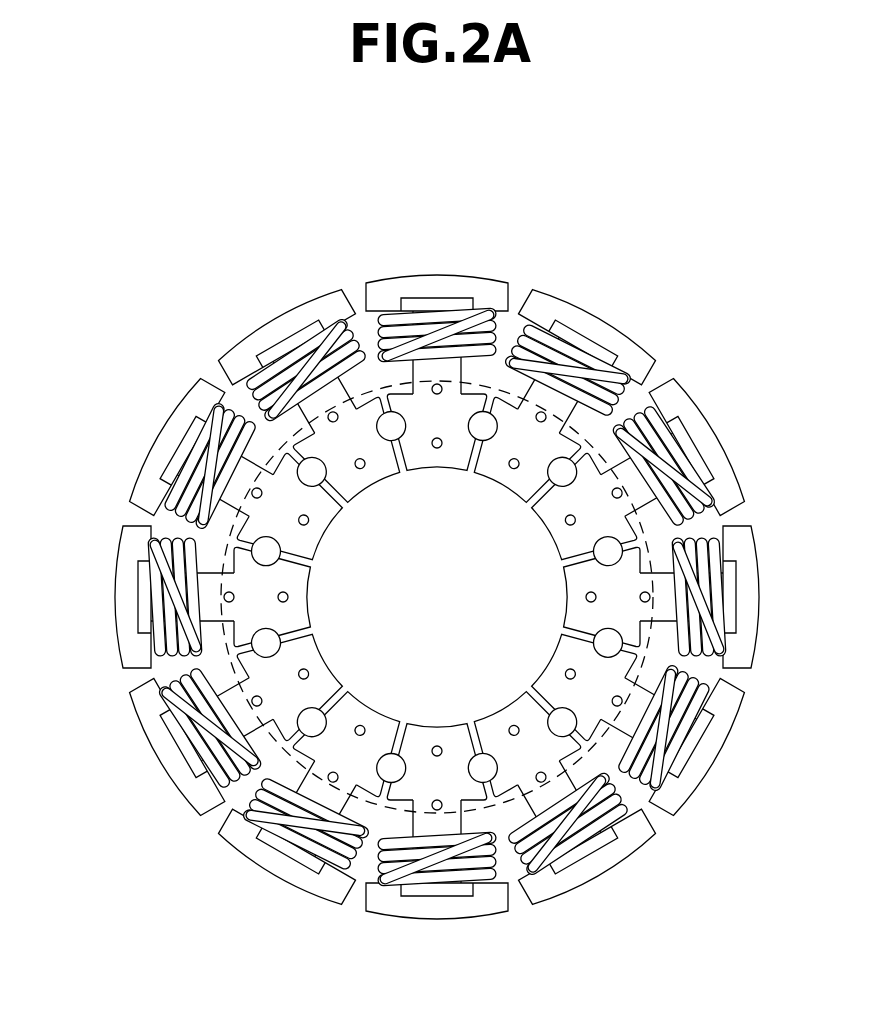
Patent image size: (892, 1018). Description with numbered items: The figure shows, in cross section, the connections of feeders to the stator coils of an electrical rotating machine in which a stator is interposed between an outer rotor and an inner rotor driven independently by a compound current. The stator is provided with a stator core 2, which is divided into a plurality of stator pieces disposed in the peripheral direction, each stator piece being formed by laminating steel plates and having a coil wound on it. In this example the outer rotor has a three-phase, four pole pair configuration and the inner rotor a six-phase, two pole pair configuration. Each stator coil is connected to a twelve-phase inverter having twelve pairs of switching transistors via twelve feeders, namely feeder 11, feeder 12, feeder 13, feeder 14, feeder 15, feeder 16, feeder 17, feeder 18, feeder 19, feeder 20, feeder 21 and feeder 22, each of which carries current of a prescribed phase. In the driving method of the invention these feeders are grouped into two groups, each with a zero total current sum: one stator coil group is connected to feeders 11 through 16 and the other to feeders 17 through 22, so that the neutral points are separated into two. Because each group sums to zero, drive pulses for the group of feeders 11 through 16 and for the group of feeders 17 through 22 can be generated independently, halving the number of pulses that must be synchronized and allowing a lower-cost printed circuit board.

The stator core 2 is at (390, 277).
The feeder 11 is at (612, 358).
The feeder 12 is at (468, 305).
The feeder 13 is at (317, 328).
The feeder 14 is at (202, 423).
The feeder 15 is at (145, 567).
The feeder 16 is at (168, 720).
The feeder 17 is at (265, 837).
The feeder 18 is at (407, 890).
The feeder 19 is at (558, 867).
The feeder 20 is at (675, 762).
The feeder 21 is at (727, 623).
The feeder 22 is at (705, 477).